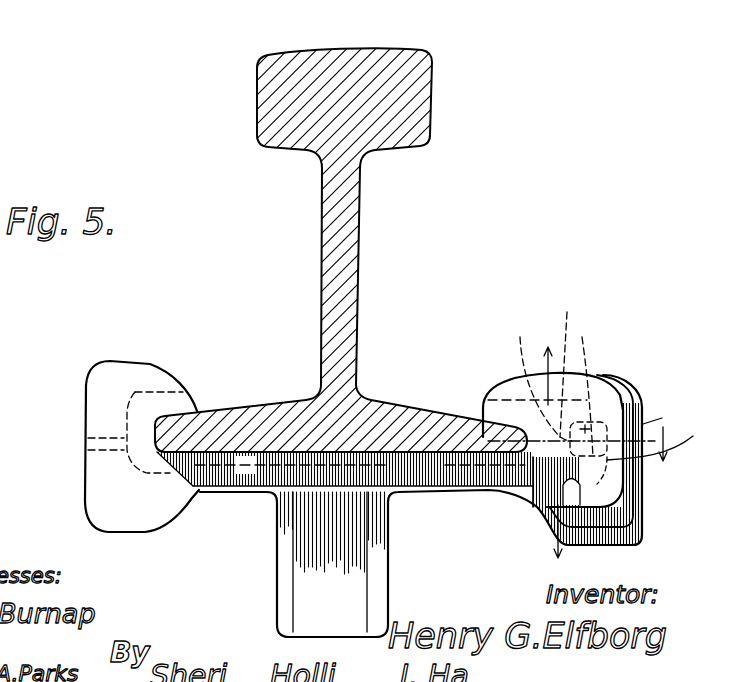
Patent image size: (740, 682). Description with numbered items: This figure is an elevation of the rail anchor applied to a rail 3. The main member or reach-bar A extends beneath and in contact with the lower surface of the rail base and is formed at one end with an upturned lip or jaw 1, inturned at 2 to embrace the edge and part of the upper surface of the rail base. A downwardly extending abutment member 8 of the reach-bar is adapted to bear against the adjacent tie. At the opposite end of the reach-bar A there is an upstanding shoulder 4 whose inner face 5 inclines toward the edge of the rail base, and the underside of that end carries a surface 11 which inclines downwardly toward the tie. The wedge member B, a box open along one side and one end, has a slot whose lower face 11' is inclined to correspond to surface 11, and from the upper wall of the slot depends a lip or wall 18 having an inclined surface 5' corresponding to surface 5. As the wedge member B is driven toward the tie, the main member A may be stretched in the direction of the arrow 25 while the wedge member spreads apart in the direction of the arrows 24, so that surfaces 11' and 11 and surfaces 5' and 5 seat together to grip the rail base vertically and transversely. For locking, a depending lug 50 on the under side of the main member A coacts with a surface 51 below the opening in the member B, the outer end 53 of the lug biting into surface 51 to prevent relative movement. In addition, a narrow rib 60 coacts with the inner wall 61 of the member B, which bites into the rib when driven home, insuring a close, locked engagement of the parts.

The rail 3 is at (360, 264).
The upturned lip or jaw 1 is at (135, 432).
The inturned portion of jaw 2 is at (142, 446).
The downwardly extending abutment member 8 is at (317, 543).
The arrow indicating stretching direction 25 is at (434, 477).
The main member or reach-bar A is at (401, 471).
The wedge member B is at (558, 450).
The inclined inner face of shoulder 5 is at (545, 379).
The inclined surface on lip 5' is at (589, 388).
The lip or wall 18 is at (568, 365).
The arrows indicating spreading direction 24 is at (554, 453).
The upstanding shoulder 4 is at (571, 453).
The narrow rib 60 is at (663, 415).
The inner wall of wedge member 61 is at (659, 442).
The depending lug 50 is at (520, 507).
The locking surface below opening 51 is at (528, 508).
The outer surface or end of lug 53 is at (535, 508).
The inclined under surface 11 is at (540, 553).
The inclined lower face of slot 11' is at (594, 555).